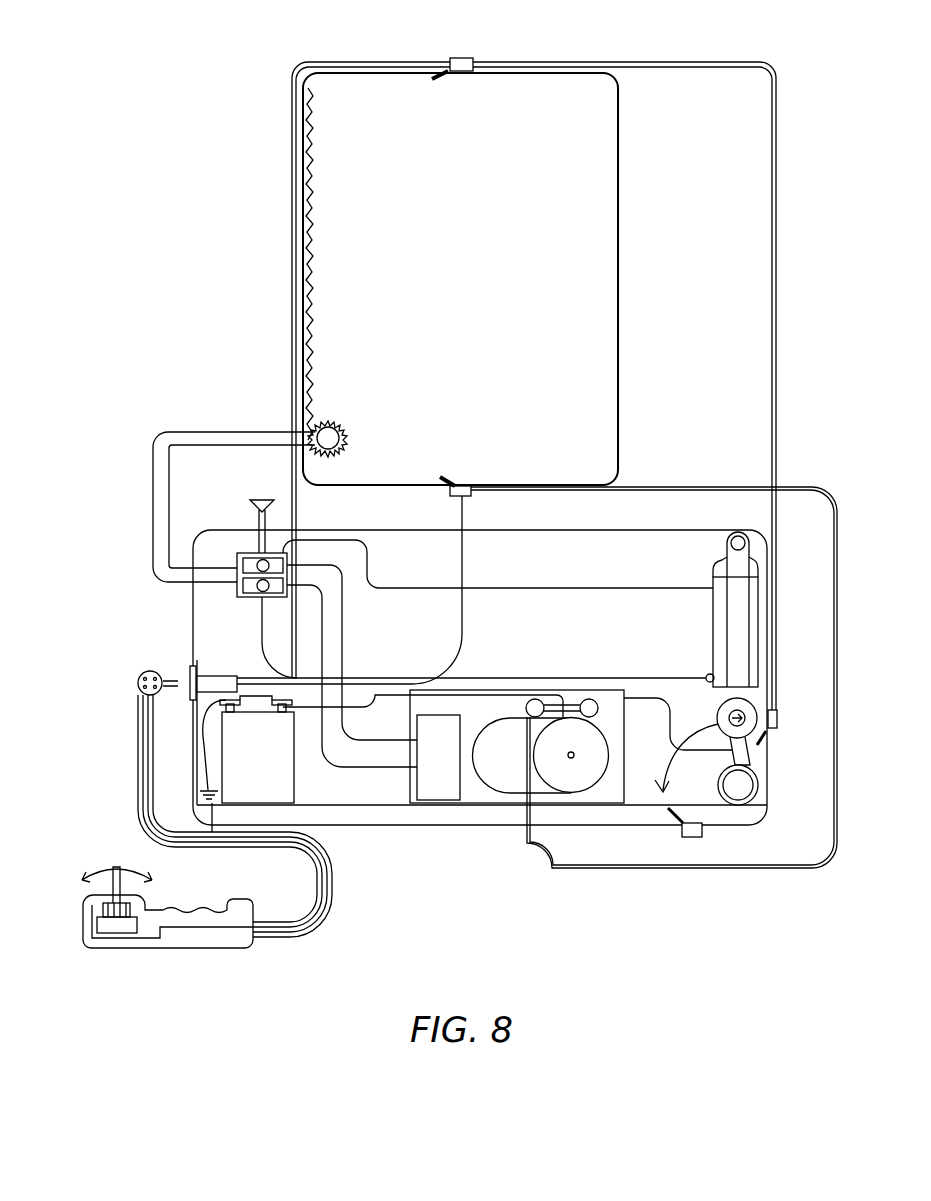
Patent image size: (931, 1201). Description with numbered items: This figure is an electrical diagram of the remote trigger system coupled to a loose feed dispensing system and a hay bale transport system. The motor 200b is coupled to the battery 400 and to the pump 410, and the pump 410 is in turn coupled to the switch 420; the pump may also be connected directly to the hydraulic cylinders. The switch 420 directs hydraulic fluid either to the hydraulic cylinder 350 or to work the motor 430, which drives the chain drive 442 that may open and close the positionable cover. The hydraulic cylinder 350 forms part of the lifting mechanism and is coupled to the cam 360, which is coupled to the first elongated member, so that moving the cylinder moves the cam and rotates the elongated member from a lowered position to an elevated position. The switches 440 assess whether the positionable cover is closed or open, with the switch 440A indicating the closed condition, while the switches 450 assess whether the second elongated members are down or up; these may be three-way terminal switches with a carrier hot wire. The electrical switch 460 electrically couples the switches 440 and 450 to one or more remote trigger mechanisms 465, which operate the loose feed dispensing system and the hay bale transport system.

The motor 200b is at (490, 797).
The hydraulic cylinder 350 is at (742, 621).
The cam 360 is at (748, 758).
The battery 400 is at (285, 776).
The pump 410 is at (430, 795).
The switch 420 is at (250, 600).
The motor 430 is at (334, 425).
The switches 440 is at (680, 832).
The switch 440A is at (780, 718).
The chain drive 442 is at (312, 205).
The switches 450 is at (461, 58).
The electrical switch 460 is at (190, 664).
The remote trigger mechanism 465 is at (73, 900).